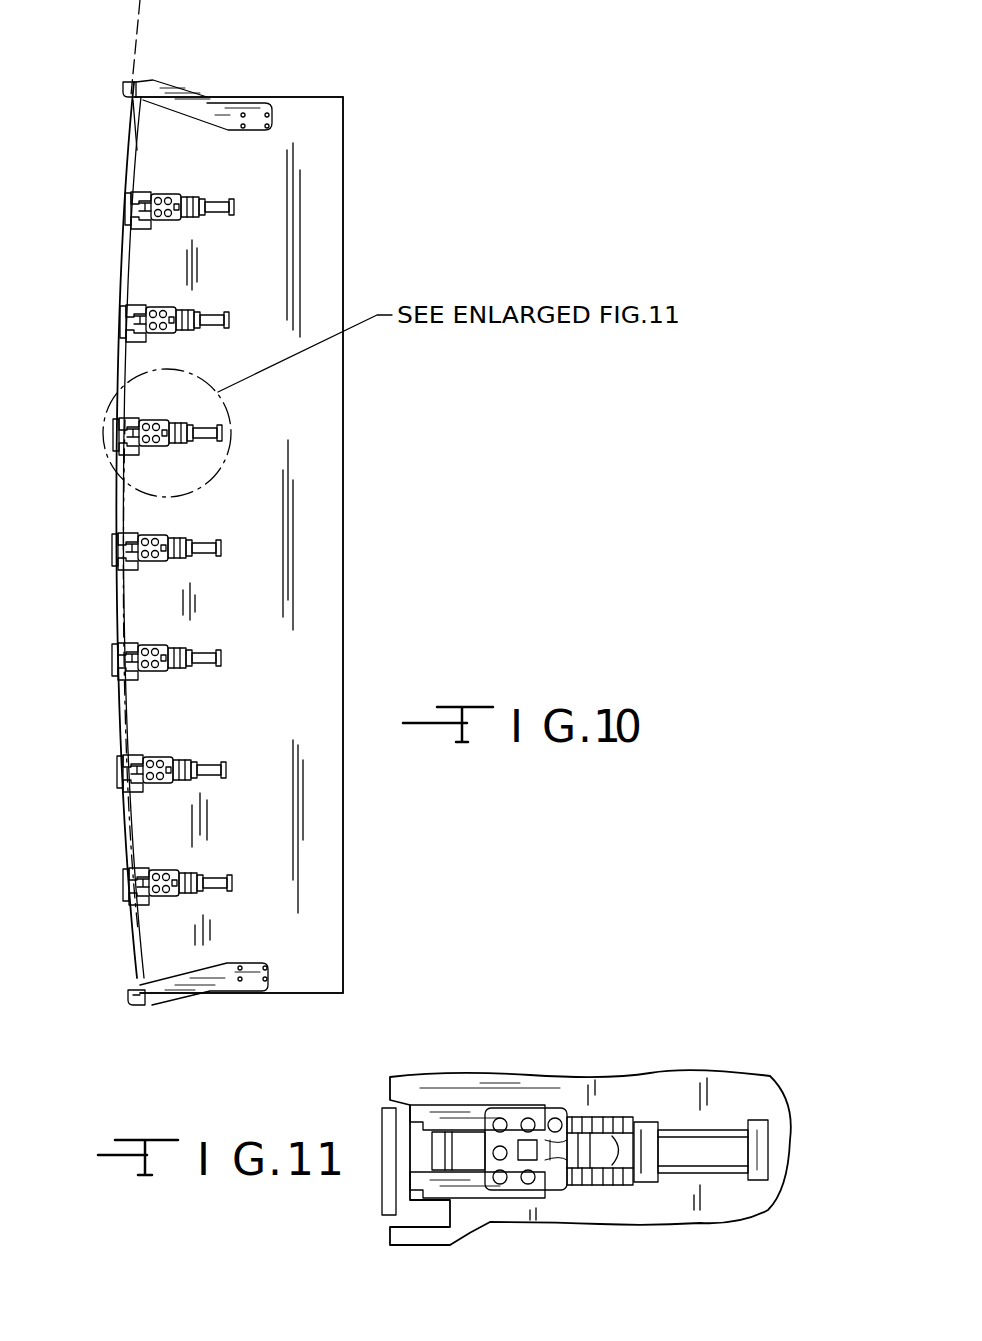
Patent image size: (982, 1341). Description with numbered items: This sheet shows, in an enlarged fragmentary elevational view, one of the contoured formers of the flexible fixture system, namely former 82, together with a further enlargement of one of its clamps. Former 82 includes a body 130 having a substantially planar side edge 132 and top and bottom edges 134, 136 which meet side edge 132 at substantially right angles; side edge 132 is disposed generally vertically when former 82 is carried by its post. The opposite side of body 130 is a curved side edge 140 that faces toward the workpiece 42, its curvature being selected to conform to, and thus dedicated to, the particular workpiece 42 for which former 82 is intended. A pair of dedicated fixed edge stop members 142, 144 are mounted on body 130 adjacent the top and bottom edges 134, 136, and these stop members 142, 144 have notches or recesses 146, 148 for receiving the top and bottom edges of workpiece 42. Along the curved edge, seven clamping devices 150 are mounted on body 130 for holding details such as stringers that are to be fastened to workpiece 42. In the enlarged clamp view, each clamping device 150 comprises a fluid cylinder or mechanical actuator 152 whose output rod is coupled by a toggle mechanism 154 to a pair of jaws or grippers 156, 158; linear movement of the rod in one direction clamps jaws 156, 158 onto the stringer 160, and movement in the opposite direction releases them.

In FIG. 10, the workpiece 42 is at (122, 46).
In FIG. 10, the former 82 is at (294, 544).
In FIG. 10, the body 130 is at (292, 544).
In FIG. 10, the side edge 132 is at (343, 445).
In FIG. 10, the top edge 134 is at (323, 97).
In FIG. 10, the bottom edge 136 is at (285, 995).
In FIG. 10, the curved side edge 140 is at (134, 152).
In FIG. 10, the fixed edge stop member 142 is at (213, 103).
In FIG. 10, the fixed edge stop member 144 is at (210, 995).
In FIG. 10, the notch 146 is at (126, 100).
In FIG. 10, the notch 148 is at (130, 978).
In FIG. 10, the clamping device 150 is at (250, 210).
In FIG. 11, the clamping device 150 is at (595, 1128).
In FIG. 11, the fluid cylinder or mechanical actuator 152 is at (717, 1143).
In FIG. 11, the toggle mechanism 154 is at (565, 1112).
In FIG. 11, the jaw 156 is at (472, 1108).
In FIG. 11, the jaw 158 is at (470, 1190).
In FIG. 10, the stringer 160 is at (118, 340).
In FIG. 11, the stringer 160 is at (382, 1207).